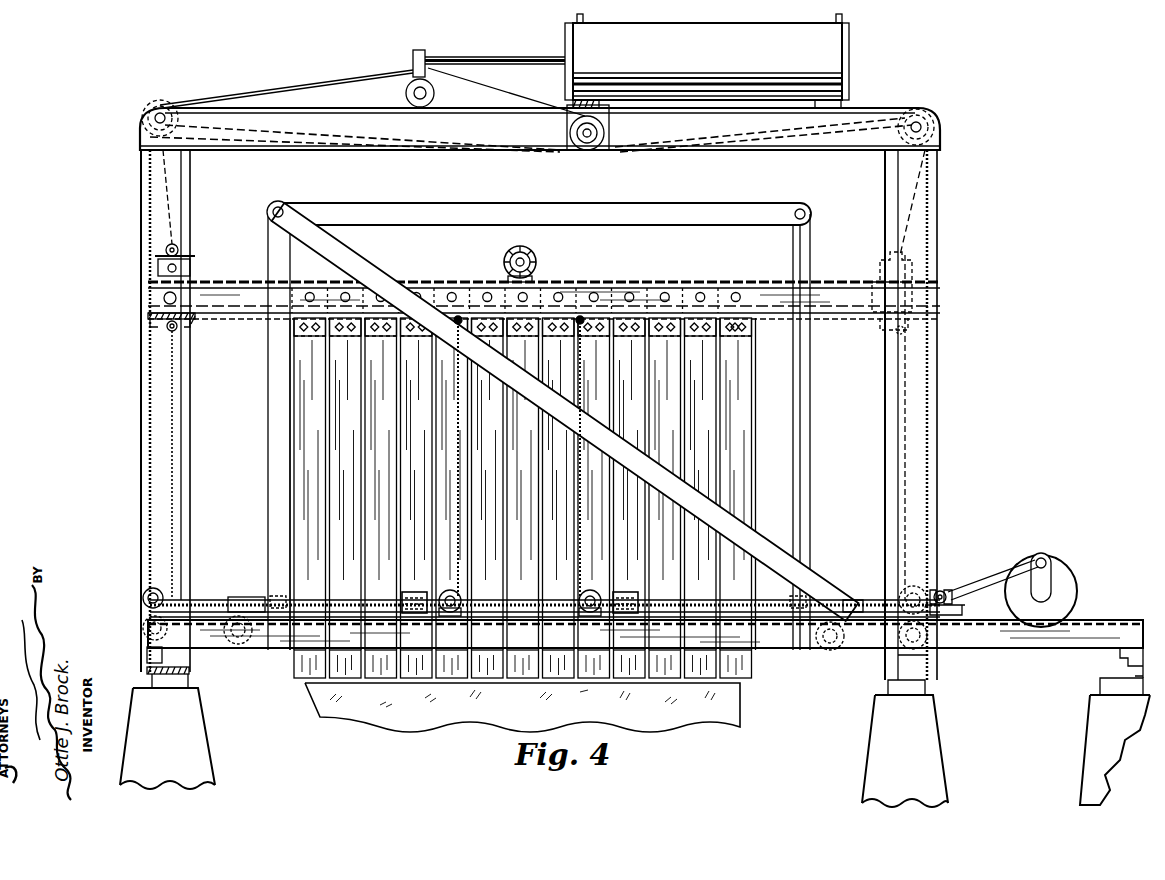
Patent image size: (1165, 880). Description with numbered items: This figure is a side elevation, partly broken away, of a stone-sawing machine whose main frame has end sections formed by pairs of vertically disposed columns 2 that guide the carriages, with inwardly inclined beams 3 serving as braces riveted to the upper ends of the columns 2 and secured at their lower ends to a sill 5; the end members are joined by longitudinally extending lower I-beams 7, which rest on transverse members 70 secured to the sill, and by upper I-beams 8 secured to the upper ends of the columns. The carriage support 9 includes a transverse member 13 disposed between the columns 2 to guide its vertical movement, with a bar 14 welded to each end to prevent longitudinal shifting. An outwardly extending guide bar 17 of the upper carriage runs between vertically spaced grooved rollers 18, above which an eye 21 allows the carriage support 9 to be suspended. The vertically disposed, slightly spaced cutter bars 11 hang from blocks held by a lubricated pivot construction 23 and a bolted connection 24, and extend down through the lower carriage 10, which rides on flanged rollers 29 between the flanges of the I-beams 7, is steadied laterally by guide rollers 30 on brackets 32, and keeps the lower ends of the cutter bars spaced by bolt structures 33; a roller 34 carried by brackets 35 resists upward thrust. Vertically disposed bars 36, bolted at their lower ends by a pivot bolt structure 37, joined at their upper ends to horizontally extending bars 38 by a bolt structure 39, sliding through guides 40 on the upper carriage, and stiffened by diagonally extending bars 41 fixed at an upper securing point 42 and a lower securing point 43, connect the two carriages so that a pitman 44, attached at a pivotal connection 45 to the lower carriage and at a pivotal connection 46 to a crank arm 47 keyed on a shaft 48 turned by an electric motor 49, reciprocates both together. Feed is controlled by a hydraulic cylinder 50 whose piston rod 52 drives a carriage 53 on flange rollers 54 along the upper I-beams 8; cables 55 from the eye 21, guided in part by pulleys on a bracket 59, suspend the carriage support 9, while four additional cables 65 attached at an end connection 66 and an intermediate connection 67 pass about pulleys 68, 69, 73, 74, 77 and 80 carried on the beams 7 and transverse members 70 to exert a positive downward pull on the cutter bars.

The columns 2 is at (180, 497).
The inwardly inclined beams 3 is at (166, 175).
The sill 5 is at (147, 673).
The lower I-beams 7 is at (283, 649).
The upper I-beams 8 is at (446, 128).
The carriage support 9 is at (650, 283).
The lower carriage 10 is at (236, 598).
The cutter bars 11 is at (345, 422).
The transverse member 13 is at (150, 318).
The bar 14 is at (160, 298).
The guide bar 17 is at (206, 310).
The grooved rollers 18 is at (192, 265).
The eye 21 is at (180, 248).
The pivot construction 23 is at (735, 292).
The bolted connection 24 is at (742, 328).
The flanged rollers 29 is at (238, 646).
The guide rollers 30 is at (625, 592).
The bracket 32 is at (415, 592).
The bolt structures 33 is at (510, 618).
The roller 34 is at (528, 256).
The brackets 35 is at (530, 278).
The vertically disposed bars 36 is at (801, 455).
The pivot bolt structure 37 is at (272, 600).
The horizontally extending bars 38 is at (725, 216).
The bolt structure 39 is at (292, 208).
The guides 40 is at (818, 318).
The diagonally extending bars 41 is at (758, 545).
The upper securing point 42 is at (273, 207).
The lower securing point 43 is at (852, 604).
The pitman 44 is at (1000, 567).
The pivotal connection 45 is at (943, 591).
The pivotal connection 46 is at (1046, 561).
The crank arm 47 is at (1050, 580).
The shaft 48 is at (1034, 594).
The electric motor 49 is at (1065, 590).
The hydraulic cylinder 50 is at (590, 41).
The piston rod 52 is at (520, 58).
The carriage 53 is at (414, 58).
The flange rollers 54 is at (406, 93).
The cables 55 is at (905, 232).
The bracket 59 is at (589, 140).
The additional cables 65 is at (582, 360).
The end connection 66 is at (178, 330).
The intermediate connection 67 is at (461, 324).
The pulley 68 is at (582, 596).
The pulley 69 is at (928, 578).
The transverse members 70 is at (147, 656).
The pulley 73 is at (456, 594).
The pulley 74 is at (143, 596).
The pulley 77 is at (926, 656).
The pulley 80 is at (143, 629).